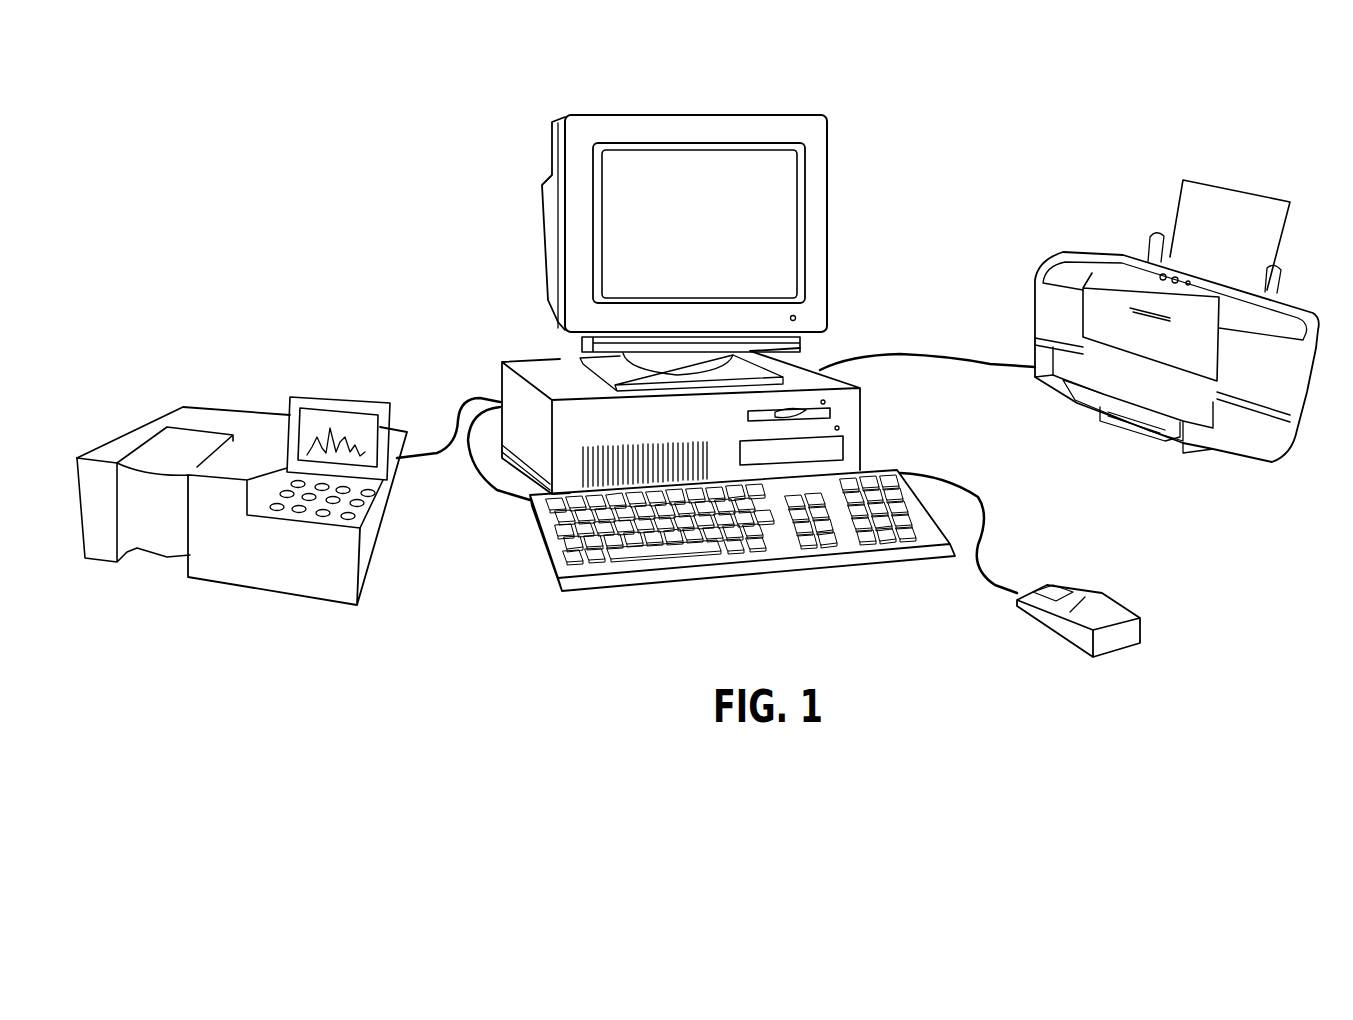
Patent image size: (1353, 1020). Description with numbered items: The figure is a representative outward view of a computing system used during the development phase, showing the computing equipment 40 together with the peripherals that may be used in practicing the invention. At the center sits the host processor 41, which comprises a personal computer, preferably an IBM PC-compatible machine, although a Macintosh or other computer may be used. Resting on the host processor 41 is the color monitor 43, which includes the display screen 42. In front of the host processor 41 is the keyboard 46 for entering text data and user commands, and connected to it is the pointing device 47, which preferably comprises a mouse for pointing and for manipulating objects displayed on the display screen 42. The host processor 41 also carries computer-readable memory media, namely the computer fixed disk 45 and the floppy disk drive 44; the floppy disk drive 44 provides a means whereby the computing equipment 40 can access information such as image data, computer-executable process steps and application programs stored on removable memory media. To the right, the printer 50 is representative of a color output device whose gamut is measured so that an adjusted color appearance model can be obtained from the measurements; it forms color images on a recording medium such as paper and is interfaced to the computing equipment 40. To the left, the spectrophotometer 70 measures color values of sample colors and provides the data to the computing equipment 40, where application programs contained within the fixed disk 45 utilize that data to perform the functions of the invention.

The computing equipment 40 is at (874, 106).
The host processor 41 is at (518, 358).
The display screen 42 is at (773, 260).
The color monitor 43 is at (661, 113).
The floppy disk drive 44 is at (831, 412).
The computer fixed disk 45 is at (839, 450).
The keyboard 46 is at (632, 566).
The pointing device 47 is at (1122, 650).
The printer 50 is at (1046, 178).
The spectrophotometer 70 is at (377, 550).